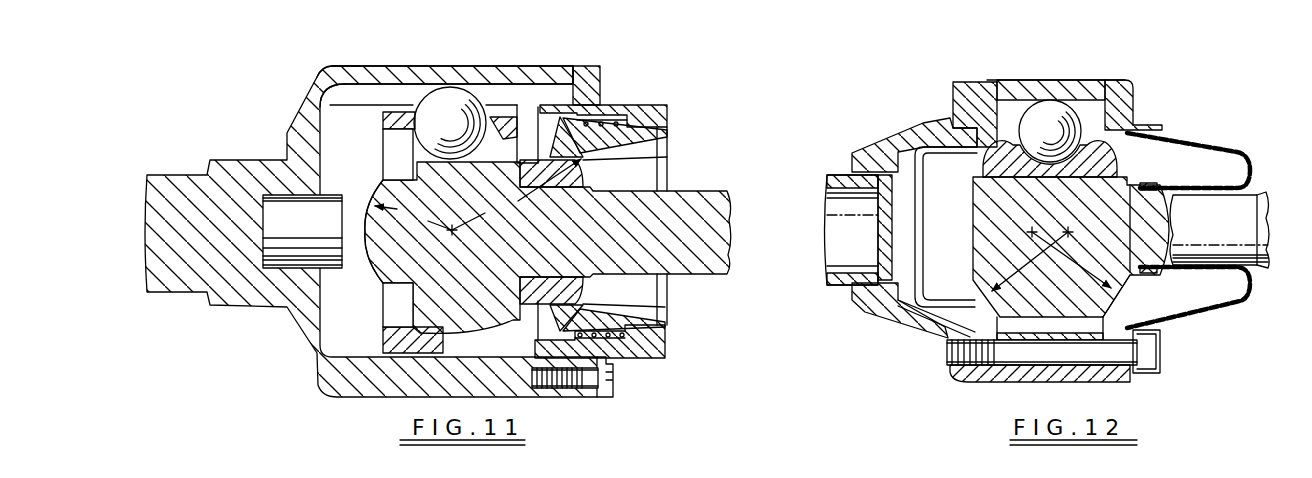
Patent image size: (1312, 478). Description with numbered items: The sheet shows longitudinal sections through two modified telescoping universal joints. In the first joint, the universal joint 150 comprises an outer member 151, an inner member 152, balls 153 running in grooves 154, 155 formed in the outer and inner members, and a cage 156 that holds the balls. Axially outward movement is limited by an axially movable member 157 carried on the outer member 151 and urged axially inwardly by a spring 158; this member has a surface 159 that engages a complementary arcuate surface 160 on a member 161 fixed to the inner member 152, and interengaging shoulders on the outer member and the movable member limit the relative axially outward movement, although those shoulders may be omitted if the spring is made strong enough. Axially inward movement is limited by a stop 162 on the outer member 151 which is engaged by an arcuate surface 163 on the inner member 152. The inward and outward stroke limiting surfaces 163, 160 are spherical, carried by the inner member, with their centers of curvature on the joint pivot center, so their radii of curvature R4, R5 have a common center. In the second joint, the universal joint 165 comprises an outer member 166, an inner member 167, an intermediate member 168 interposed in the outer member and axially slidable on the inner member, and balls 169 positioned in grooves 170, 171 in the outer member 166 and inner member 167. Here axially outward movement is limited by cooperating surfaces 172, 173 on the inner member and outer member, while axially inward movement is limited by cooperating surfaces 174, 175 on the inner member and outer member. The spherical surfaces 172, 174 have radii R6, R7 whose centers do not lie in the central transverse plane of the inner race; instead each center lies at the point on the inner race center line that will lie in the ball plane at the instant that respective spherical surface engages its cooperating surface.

In FIG. 11, the universal joint 150 is at (507, 60).
In FIG. 11, the outer member 151 is at (549, 72).
In FIG. 11, the inner member 152 is at (388, 265).
In FIG. 11, the balls 153 is at (451, 94).
In FIG. 11, the groove 154 is at (362, 90).
In FIG. 11, the groove 155 is at (413, 154).
In FIG. 11, the cage 156 is at (388, 125).
In FIG. 11, the axially movable member 157 is at (612, 143).
In FIG. 11, the spring 158 is at (603, 114).
In FIG. 11, the surface 159 is at (600, 106).
In FIG. 11, the arcuate surface 160 is at (584, 160).
In FIG. 11, the member 161 is at (577, 183).
In FIG. 11, the stop 162 is at (302, 231).
In FIG. 11, the arcuate surface 163 is at (376, 265).
In FIG. 11, the radius of curvature R4 is at (416, 220).
In FIG. 11, the radius of curvature R5 is at (516, 194).
In FIG. 12, the universal joint 165 is at (1030, 76).
In FIG. 12, the outer member 166 is at (1049, 90).
In FIG. 12, the inner member 167 is at (1007, 207).
In FIG. 12, the intermediate member 168 is at (1128, 142).
In FIG. 12, the balls 169 is at (1094, 81).
In FIG. 12, the groove 170 is at (1010, 106).
In FIG. 12, the groove 171 is at (1108, 157).
In FIG. 12, the cooperating surface 172 is at (1127, 296).
In FIG. 12, the cooperating surface 173 is at (1167, 316).
In FIG. 12, the cooperating surface 174 is at (971, 293).
In FIG. 12, the cooperating surface 175 is at (970, 303).
In FIG. 12, the radius R7 is at (1030, 259).
In FIG. 12, the radius R6 is at (1071, 257).